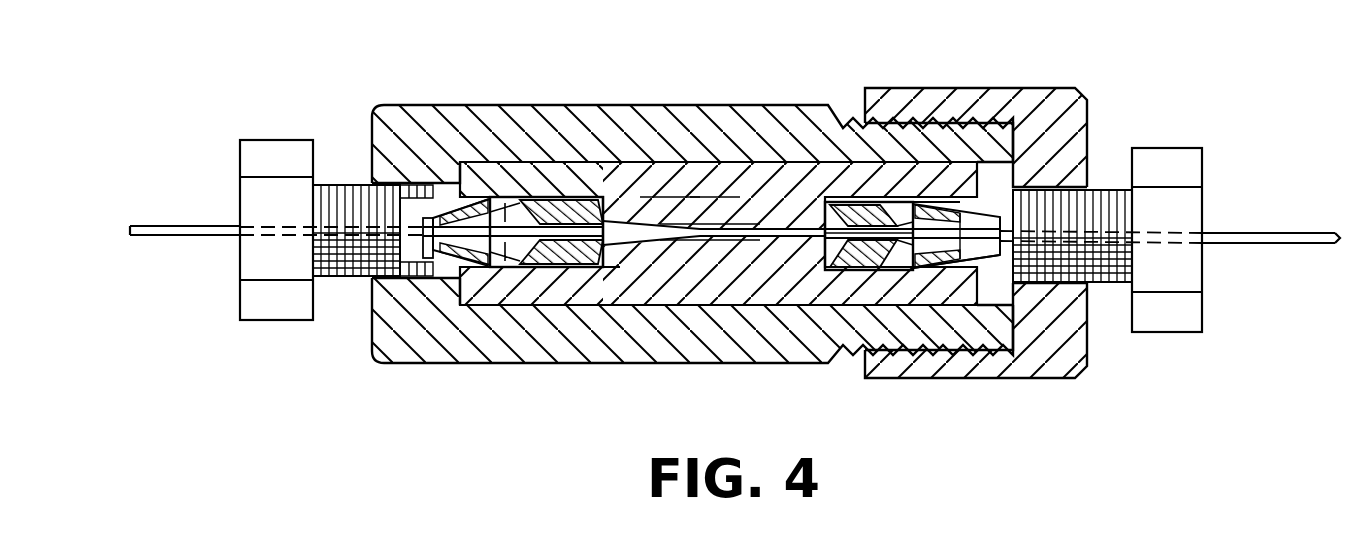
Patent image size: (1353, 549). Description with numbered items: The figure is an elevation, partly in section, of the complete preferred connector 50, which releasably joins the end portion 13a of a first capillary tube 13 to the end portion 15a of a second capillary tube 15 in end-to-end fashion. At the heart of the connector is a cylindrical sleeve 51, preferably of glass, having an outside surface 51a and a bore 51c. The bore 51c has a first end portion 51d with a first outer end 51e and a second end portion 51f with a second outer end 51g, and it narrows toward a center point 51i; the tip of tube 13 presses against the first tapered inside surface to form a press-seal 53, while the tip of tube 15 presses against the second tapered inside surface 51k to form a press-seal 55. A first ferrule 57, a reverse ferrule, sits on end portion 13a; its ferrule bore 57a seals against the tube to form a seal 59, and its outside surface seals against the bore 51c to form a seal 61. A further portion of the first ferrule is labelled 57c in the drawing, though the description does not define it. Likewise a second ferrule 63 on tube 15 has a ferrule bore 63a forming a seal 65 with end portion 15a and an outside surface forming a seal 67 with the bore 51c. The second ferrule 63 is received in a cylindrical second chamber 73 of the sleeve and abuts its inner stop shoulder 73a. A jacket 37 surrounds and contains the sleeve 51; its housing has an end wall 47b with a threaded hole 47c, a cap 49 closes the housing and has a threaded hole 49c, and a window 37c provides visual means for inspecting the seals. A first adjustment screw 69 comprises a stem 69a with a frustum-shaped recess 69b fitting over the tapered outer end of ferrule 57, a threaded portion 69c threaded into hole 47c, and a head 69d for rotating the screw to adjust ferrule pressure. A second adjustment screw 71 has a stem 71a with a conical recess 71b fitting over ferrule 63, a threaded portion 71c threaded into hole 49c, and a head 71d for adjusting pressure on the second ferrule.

The capillary tube 13 is at (188, 238).
The end portion of capillary tube 13a is at (662, 240).
The capillary tube 15 is at (1300, 234).
The end portion of capillary tube 15a is at (746, 238).
The jacket 37 is at (750, 350).
The window 37c is at (695, 300).
The housing end wall 47b is at (385, 132).
The threaded hole 47c is at (358, 196).
The cap 49 is at (1060, 100).
The threaded hole 49c is at (1088, 280).
The connector 50 is at (742, 66).
The cylindrical sleeve 51 is at (472, 300).
The outside surface 51a is at (800, 300).
The bore 51c is at (683, 300).
The first end portion 51d is at (505, 200).
The first outer end 51e is at (378, 290).
The second end portion 51f is at (886, 300).
The second outer end 51g is at (1008, 300).
The center point 51i is at (715, 300).
The second tapered inside surface 51k is at (743, 300).
The press-seal 53 is at (690, 290).
The press-seal 55 is at (702, 265).
The first ferrule 57 is at (522, 250).
The ferrule bore 57a is at (506, 262).
The chuck jaws 57c is at (556, 292).
The seal 59 is at (562, 262).
The seal 61 is at (583, 292).
The second ferrule 63 is at (878, 300).
The ferrule bore 63a is at (846, 275).
The seal 65 is at (896, 270).
The seal 67 is at (846, 260).
The first adjustment screw 69 is at (278, 300).
The stem 69a is at (420, 186).
The recess 69b is at (440, 252).
The threaded portion 69c is at (355, 282).
The head 69d is at (280, 152).
The second adjustment screw 71 is at (468, 255).
The stem 71a is at (610, 300).
The recess 71b is at (946, 290).
The threaded portion 71c is at (1095, 222).
The head 71d is at (1180, 165).
The second chamber 73 is at (962, 262).
The inner stop shoulder 73a is at (833, 222).